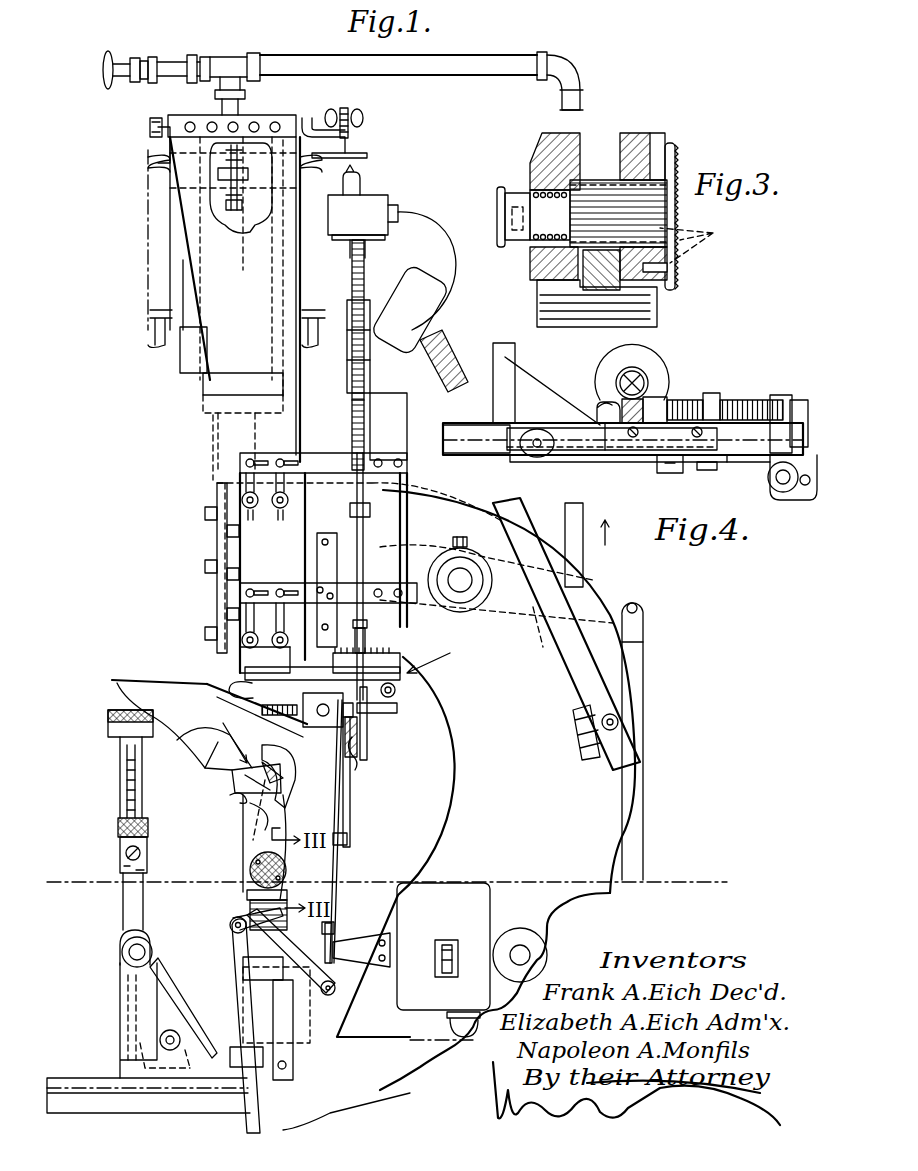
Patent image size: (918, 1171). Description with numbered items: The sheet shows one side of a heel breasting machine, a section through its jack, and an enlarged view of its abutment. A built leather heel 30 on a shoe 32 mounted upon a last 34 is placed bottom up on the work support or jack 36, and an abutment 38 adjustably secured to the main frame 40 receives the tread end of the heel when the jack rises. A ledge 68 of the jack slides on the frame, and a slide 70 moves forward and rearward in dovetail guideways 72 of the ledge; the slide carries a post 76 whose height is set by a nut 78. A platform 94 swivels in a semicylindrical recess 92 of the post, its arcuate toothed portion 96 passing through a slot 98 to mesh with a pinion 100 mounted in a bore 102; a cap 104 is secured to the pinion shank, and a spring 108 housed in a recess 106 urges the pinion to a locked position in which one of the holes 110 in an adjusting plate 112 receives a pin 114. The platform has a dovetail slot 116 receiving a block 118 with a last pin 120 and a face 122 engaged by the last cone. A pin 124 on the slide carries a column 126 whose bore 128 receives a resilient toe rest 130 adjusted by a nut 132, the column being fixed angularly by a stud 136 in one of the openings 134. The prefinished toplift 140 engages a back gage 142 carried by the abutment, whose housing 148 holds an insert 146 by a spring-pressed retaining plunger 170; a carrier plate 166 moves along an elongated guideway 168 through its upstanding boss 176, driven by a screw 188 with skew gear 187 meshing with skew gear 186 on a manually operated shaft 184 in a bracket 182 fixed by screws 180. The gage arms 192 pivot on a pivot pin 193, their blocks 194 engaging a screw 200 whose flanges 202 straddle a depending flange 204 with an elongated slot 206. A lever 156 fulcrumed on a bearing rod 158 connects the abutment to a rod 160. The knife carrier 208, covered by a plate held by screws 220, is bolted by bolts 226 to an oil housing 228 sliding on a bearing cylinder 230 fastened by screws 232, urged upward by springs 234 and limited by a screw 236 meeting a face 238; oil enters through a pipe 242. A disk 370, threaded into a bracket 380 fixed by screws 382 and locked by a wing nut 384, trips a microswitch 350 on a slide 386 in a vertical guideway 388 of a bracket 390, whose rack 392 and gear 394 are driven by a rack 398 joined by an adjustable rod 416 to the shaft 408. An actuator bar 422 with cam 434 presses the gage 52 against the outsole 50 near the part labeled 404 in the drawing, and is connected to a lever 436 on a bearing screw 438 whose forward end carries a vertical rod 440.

In FIG. 1, the built leather heel 30 is at (233, 680).
In FIG. 1, the shoe 32 is at (150, 693).
In FIG. 1, the last 34 is at (293, 793).
In FIG. 1, the work support or jack 36 is at (88, 730).
In FIG. 1, the abutment 38 is at (443, 659).
In FIG. 4, the abutment 38 is at (609, 545).
In FIG. 1, the main frame 40 is at (262, 118).
In FIG. 1, the outsole 50 is at (163, 683).
In FIG. 1, the gage or testing member 52 is at (230, 682).
In FIG. 1, the ledge 68 is at (77, 1107).
In FIG. 1, the slide 70 is at (120, 1073).
In FIG. 1, the dovetail guideways 72 is at (92, 1090).
In FIG. 1, the post 76 is at (257, 832).
In FIG. 3, the post 76 is at (567, 307).
In FIG. 1, the nut 78 is at (243, 960).
In FIG. 1, the semicylindrical recess 92 is at (253, 803).
In FIG. 1, the platform 94 is at (237, 797).
In FIG. 1, the arcuate toothed portion 96 is at (340, 870).
In FIG. 3, the arcuate toothed portion 96 is at (580, 263).
In FIG. 3, the slot 98 is at (620, 290).
In FIG. 3, the pinion 100 is at (597, 200).
In FIG. 3, the bore 102 is at (627, 247).
In FIG. 3, the cap 104 is at (505, 185).
In FIG. 3, the recess 106 is at (560, 190).
In FIG. 3, the spring 108 is at (563, 190).
In FIG. 1, the holes 110 is at (250, 870).
In FIG. 3, the holes 110 is at (706, 241).
In FIG. 1, the adjusting plate 112 is at (287, 868).
In FIG. 3, the adjusting plate 112 is at (670, 145).
In FIG. 3, the pin 114 is at (681, 267).
In FIG. 1, the dovetail slot 116 is at (278, 775).
In FIG. 1, the block 118 is at (215, 548).
In FIG. 1, the last pin 120 is at (241, 735).
In FIG. 1, the face 122 is at (205, 740).
In FIG. 1, the pin 124 is at (130, 952).
In FIG. 1, the column 126 is at (145, 913).
In FIG. 1, the bore 128 is at (122, 873).
In FIG. 1, the resilient toe rest 130 is at (123, 773).
In FIG. 1, the nut 132 is at (120, 825).
In FIG. 1, the openings 134 is at (187, 1060).
In FIG. 1, the stud 136 is at (172, 1032).
In FIG. 1, the prefinished toplift 140 is at (271, 637).
In FIG. 1, the back gage 142 is at (264, 625).
In FIG. 4, the back gage 142 is at (517, 455).
In FIG. 4, the insert 146 is at (485, 452).
In FIG. 1, the housing 148 is at (218, 650).
In FIG. 4, the housing 148 is at (483, 430).
In FIG. 1, the lever 156 is at (607, 603).
In FIG. 1, the bearing rod 158 is at (463, 580).
In FIG. 1, the rod 160 is at (632, 672).
In FIG. 4, the carrier plate 166 is at (757, 440).
In FIG. 4, the elongated guideway 168 is at (760, 450).
In FIG. 4, the spring-pressed retaining plunger 170 is at (537, 457).
In FIG. 4, the upstanding boss 176 is at (713, 400).
In FIG. 4, the screws 180 is at (603, 402).
In FIG. 4, the bracket 182 is at (647, 380).
In FIG. 4, the manually operated shaft 184 is at (650, 372).
In FIG. 4, the skew gear 186 is at (622, 373).
In FIG. 4, the skew gear 187 is at (613, 427).
In FIG. 4, the screw 188 is at (703, 403).
In FIG. 4, the arms 192 is at (620, 462).
In FIG. 4, the pivot pin 193 is at (663, 473).
In FIG. 4, the blocks 194 is at (783, 487).
In FIG. 1, the screw 200 is at (392, 697).
In FIG. 4, the screw 200 is at (800, 500).
In FIG. 4, the flanges 202 is at (800, 490).
In FIG. 4, the depending flange 204 is at (707, 467).
In FIG. 4, the elongated slot 206 is at (773, 473).
In FIG. 1, the knife carrier 208 is at (228, 425).
In FIG. 1, the screws 220 is at (215, 600).
In FIG. 1, the bolts 226 is at (200, 378).
In FIG. 1, the oil housing 228 is at (180, 280).
In FIG. 1, the bearing cylinder 230 is at (213, 228).
In FIG. 1, the screws 232 is at (212, 124).
In FIG. 1, the springs 234 is at (160, 168).
In FIG. 1, the screw 236 is at (244, 232).
In FIG. 1, the face 238 is at (165, 150).
In FIG. 1, the pipe 242 is at (256, 120).
In FIG. 1, the microswitch 350 is at (372, 179).
In FIG. 1, the disk 370 is at (355, 153).
In FIG. 1, the bracket 380 is at (310, 217).
In FIG. 1, the screws 382 is at (283, 413).
In FIG. 1, the wing nut 384 is at (355, 112).
In FIG. 1, the slide 386 is at (362, 268).
In FIG. 1, the vertical guideway 388 is at (352, 300).
In FIG. 1, the bracket 390 is at (407, 420).
In FIG. 1, the rack 392 is at (352, 270).
In FIG. 1, the gear 394 is at (352, 360).
In FIG. 1, the rack 398 is at (352, 425).
In FIG. 1, the block 404 is at (293, 772).
In FIG. 1, the shaft 408 is at (385, 717).
In FIG. 1, the adjustable rod 416 is at (362, 555).
In FIG. 1, the actuator bar 422 is at (347, 805).
In FIG. 1, the cam 434 is at (340, 763).
In FIG. 1, the lever 436 is at (323, 987).
In FIG. 1, the bearing screw 438 is at (350, 912).
In FIG. 1, the vertical rod 440 is at (250, 1107).